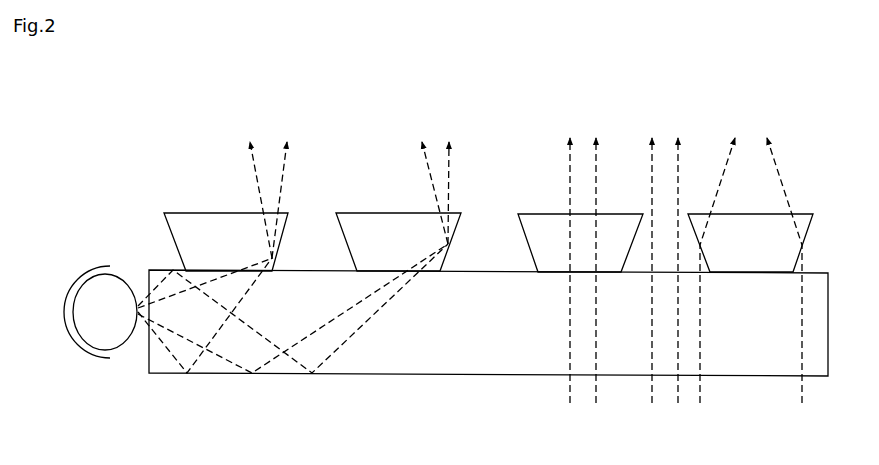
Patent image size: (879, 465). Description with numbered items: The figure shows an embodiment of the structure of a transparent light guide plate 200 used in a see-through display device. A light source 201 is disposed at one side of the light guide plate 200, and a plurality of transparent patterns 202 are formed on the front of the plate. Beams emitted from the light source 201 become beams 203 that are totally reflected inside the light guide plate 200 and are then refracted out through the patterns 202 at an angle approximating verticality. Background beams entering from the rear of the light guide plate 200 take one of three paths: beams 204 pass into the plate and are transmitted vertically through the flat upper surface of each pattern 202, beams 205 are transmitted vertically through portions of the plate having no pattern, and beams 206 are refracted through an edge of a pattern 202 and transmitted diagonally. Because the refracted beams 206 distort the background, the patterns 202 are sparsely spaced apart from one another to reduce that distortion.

The transparent light guide plate 200 is at (497, 350).
The light source 201 is at (95, 338).
The transparent patterns 202 is at (182, 235).
The beams 203 is at (237, 128).
The beams 204 is at (552, 131).
The beams 205 is at (633, 131).
The beams 206 is at (717, 131).